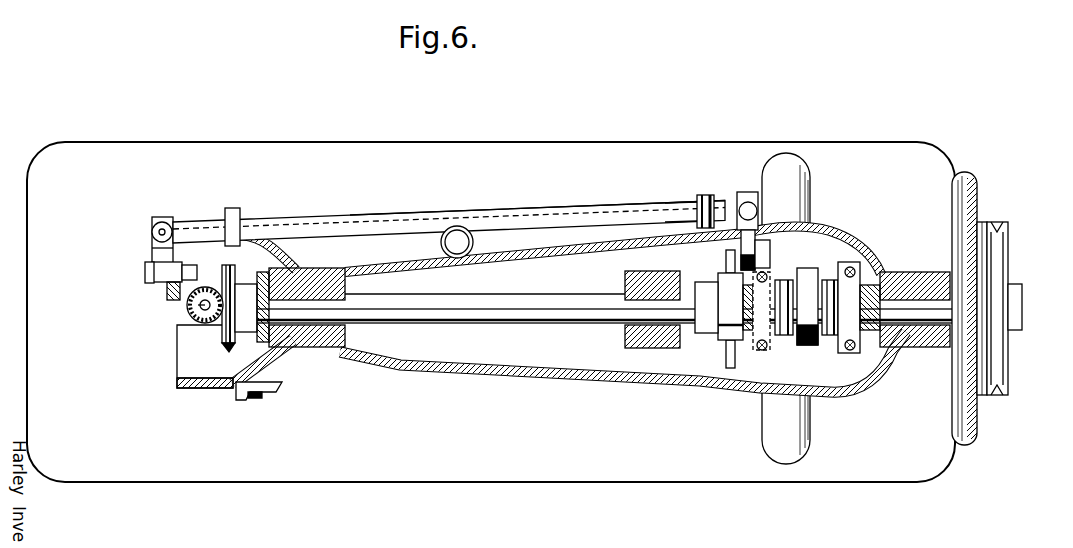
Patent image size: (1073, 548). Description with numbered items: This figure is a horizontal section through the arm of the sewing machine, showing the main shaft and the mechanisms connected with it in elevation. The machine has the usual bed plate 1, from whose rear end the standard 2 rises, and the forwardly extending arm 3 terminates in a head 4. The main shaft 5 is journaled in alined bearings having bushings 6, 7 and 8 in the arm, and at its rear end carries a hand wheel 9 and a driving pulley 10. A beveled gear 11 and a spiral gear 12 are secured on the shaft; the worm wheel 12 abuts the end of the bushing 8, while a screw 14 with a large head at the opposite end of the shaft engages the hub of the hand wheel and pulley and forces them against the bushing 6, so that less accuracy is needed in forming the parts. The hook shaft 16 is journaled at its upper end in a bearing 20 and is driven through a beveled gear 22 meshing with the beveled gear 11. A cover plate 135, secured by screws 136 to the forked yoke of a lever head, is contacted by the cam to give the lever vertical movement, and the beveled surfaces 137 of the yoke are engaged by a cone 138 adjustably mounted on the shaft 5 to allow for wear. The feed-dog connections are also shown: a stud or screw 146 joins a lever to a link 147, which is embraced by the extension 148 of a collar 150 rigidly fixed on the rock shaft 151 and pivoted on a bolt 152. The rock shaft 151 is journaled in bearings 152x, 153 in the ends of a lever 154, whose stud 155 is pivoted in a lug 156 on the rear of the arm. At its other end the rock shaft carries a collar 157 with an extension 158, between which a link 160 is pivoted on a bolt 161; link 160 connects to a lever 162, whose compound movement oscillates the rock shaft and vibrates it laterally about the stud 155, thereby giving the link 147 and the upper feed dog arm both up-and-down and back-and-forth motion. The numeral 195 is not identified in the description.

The bed plate 1 is at (560, 470).
The standard 2 is at (760, 394).
The arm 3 is at (442, 364).
The head 4 is at (200, 387).
The main shaft 5 is at (530, 322).
The bushing 6 is at (915, 290).
The bushing 7 is at (625, 287).
The bushing 8 is at (347, 288).
The hand wheel 9 is at (975, 196).
The driving pulley 10 is at (1001, 232).
The beveled gear 11 is at (233, 284).
The spiral gear 12 is at (272, 279).
The screw 14 is at (1020, 294).
The hook shaft 16 is at (199, 307).
The bearing 20 is at (187, 298).
The beveled gear 22 is at (192, 313).
The cover plate 135 is at (858, 298).
The screws 136 is at (766, 350).
The beveled surfaces 137 is at (850, 290).
The cone 138 is at (733, 360).
The stud or screw 146 is at (146, 270).
The link 147 is at (158, 256).
The extension 148 is at (157, 222).
The collar 150 is at (185, 225).
The rock shaft 151 is at (368, 222).
The bolt 152 is at (164, 228).
The bearing 152x is at (234, 220).
The bearing 153 is at (683, 210).
The lever 154 is at (583, 217).
The stud 155 is at (462, 236).
The lug 156 is at (482, 256).
The collar 157 is at (720, 198).
The extension 158 is at (747, 204).
The link 160 is at (748, 238).
The bolt 161 is at (750, 208).
The lever 162 is at (771, 253).
The collar 195 is at (800, 346).